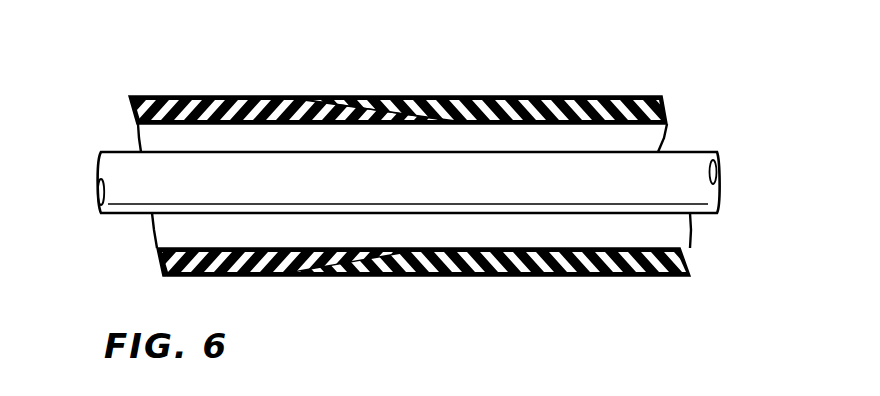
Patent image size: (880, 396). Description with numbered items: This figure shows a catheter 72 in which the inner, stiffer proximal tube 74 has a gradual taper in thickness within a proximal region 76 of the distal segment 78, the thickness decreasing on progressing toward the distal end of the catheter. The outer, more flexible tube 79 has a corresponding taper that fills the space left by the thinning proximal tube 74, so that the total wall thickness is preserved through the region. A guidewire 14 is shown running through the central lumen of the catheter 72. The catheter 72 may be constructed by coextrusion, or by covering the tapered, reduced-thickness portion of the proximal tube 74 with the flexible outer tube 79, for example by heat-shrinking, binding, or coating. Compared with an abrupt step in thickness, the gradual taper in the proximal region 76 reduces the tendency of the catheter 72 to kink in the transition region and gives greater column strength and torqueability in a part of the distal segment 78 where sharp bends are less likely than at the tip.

The guidewire 14 is at (412, 192).
The catheter 72 is at (394, 104).
The proximal tube 74 is at (303, 88).
The proximal region 76 is at (393, 124).
The distal segment 78 is at (474, 88).
The outer tube 79 is at (425, 288).